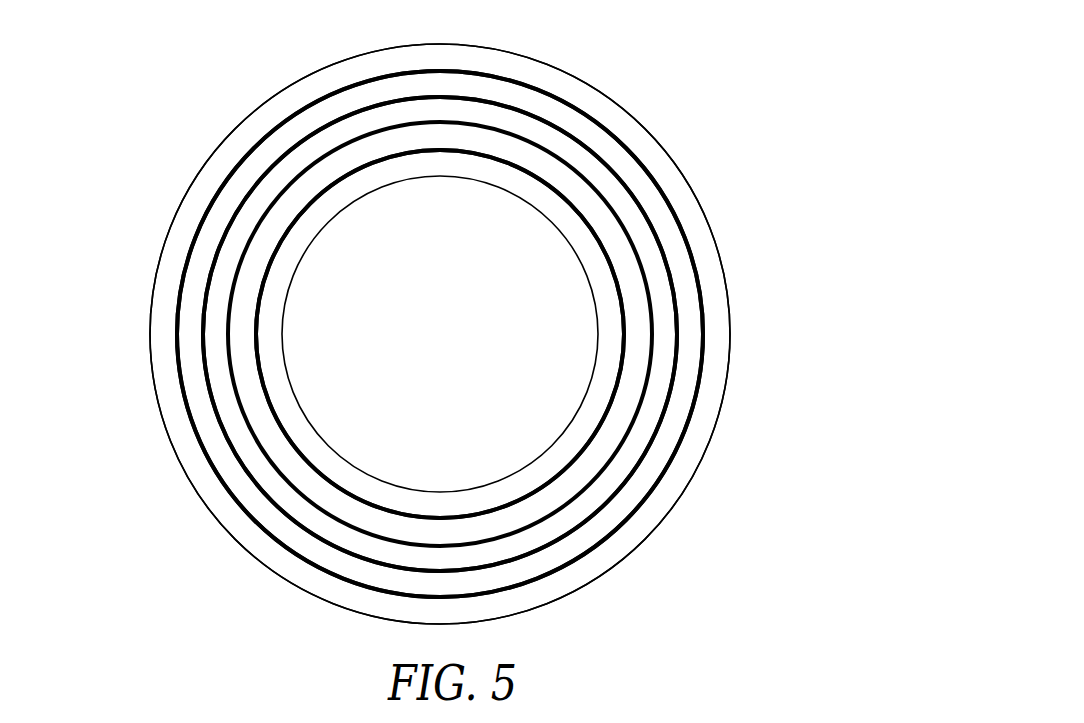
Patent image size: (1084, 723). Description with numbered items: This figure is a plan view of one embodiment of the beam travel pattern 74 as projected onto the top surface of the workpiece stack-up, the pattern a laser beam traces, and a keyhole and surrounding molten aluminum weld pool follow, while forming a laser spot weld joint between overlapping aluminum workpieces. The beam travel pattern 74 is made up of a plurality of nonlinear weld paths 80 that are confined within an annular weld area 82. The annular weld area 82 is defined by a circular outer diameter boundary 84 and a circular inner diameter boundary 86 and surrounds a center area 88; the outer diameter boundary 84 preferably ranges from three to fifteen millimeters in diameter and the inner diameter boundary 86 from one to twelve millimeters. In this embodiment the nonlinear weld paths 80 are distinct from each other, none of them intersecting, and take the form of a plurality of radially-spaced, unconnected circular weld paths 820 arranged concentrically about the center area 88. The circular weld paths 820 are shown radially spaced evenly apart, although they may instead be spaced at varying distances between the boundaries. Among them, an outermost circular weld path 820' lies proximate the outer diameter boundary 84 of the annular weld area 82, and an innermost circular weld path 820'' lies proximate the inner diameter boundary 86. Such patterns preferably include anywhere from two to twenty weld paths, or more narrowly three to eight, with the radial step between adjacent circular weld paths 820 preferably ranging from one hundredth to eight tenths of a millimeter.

The beam travel pattern 74 is at (664, 67).
The outer diameter boundary 84 is at (232, 132).
The annular weld area 82 is at (491, 115).
The nonlinear weld paths 80 is at (653, 286).
The circular weld paths 820 is at (376, 334).
The outermost circular weld path 820' is at (409, 334).
The innermost circular weld path 820'' is at (528, 334).
The inner diameter boundary 86 is at (527, 470).
The center area 88 is at (448, 344).